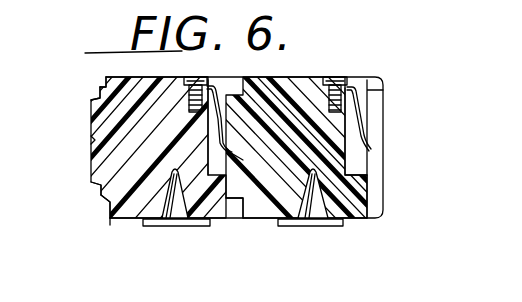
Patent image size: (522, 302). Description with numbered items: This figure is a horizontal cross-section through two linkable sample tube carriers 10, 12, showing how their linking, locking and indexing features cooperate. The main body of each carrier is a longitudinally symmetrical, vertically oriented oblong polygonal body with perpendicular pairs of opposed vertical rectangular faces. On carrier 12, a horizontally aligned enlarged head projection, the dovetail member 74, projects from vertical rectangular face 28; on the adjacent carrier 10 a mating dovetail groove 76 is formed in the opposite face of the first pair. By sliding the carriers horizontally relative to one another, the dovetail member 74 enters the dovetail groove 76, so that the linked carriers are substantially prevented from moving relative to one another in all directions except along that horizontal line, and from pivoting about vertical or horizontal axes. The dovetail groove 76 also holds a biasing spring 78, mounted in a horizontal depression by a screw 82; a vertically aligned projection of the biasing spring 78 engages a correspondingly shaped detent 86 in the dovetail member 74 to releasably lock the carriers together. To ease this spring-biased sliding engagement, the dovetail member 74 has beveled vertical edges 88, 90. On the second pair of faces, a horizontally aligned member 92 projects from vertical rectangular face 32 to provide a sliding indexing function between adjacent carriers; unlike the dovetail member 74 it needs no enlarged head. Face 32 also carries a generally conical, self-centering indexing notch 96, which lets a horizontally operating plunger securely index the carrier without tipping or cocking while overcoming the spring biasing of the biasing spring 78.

The sample tube carrier 10 is at (104, 80).
The sample tube carrier 12 is at (351, 216).
The vertical rectangular face 28 is at (100, 204).
The vertical rectangular face 32 is at (120, 221).
The dovetail member 74 is at (90, 128).
The dovetail groove 76 is at (364, 95).
The biasing spring 78 is at (383, 143).
The screw 82 is at (188, 77).
The detent 86 is at (93, 148).
The beveled vertical edge 88 is at (96, 99).
The beveled vertical edge 90 is at (90, 184).
The horizontally aligned member 92 is at (177, 228).
The indexing notch 96 is at (167, 190).